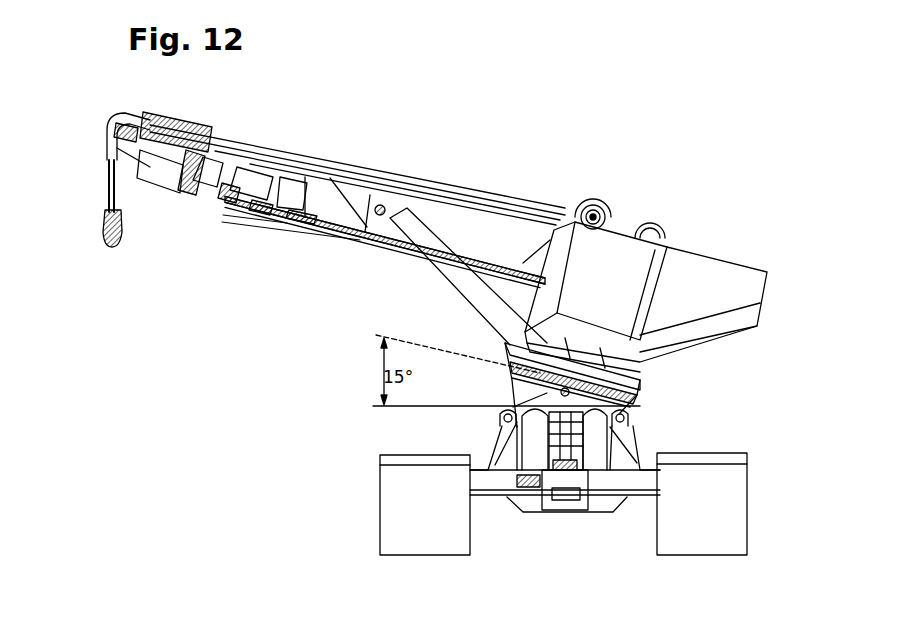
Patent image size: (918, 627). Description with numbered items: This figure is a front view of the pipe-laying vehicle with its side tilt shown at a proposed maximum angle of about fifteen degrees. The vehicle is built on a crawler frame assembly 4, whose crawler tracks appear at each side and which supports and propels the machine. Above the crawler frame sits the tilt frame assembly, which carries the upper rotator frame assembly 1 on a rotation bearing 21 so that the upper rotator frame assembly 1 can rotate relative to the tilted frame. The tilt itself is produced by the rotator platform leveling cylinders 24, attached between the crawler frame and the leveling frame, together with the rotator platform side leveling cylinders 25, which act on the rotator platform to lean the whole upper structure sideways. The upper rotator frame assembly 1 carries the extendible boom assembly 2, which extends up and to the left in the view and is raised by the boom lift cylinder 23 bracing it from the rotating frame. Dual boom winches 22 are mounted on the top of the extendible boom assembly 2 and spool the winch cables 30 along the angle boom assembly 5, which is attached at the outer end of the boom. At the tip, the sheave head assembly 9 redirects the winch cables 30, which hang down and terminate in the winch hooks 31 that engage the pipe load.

The upper rotator frame assembly 1 is at (764, 268).
The extendible boom assembly 2 is at (317, 243).
The crawler frame assembly 4 is at (385, 521).
The angle boom assembly 5 is at (155, 177).
The sheave head assembly 9 is at (107, 134).
The rotation bearing 21 is at (505, 360).
The boom winches 22 is at (595, 200).
The boom lift cylinder 23 is at (457, 280).
The rotator platform leveling cylinders 24 is at (497, 463).
The rotator platform side leveling cylinders 25 is at (490, 432).
The winch cables 30 is at (107, 186).
The winch hooks 31 is at (113, 250).